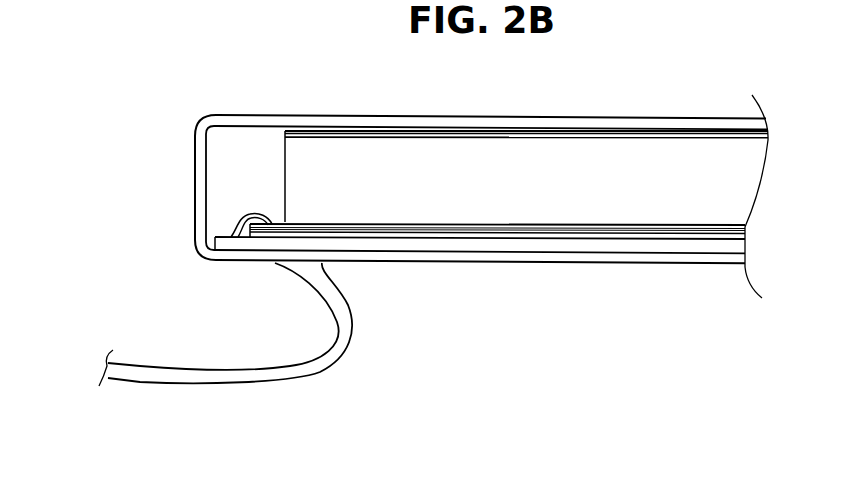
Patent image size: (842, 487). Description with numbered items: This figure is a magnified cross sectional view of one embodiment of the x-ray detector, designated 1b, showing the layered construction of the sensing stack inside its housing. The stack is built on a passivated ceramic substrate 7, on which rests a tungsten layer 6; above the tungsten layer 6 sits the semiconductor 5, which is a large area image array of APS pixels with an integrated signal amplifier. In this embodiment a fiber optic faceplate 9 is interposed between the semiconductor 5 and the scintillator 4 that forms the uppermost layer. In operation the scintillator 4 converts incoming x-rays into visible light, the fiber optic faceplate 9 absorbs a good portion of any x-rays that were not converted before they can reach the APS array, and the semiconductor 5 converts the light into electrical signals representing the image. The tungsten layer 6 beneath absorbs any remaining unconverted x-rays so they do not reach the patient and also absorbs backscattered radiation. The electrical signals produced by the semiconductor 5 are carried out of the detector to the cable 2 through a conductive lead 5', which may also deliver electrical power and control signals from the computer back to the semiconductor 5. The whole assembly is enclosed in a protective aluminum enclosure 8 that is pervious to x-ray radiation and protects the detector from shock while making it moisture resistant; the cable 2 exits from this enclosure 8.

The connector assembly 1b is at (148, 240).
The cable 2 is at (332, 353).
The scintillator 4 is at (572, 130).
The semiconductor 5 is at (497, 265).
The conductive lead 5' is at (208, 203).
The tungsten layer 6 is at (558, 237).
The passivated ceramic substrate 7 is at (478, 245).
The protective aluminum enclosure 8 is at (388, 122).
The fiber optic faceplate 9 is at (653, 143).